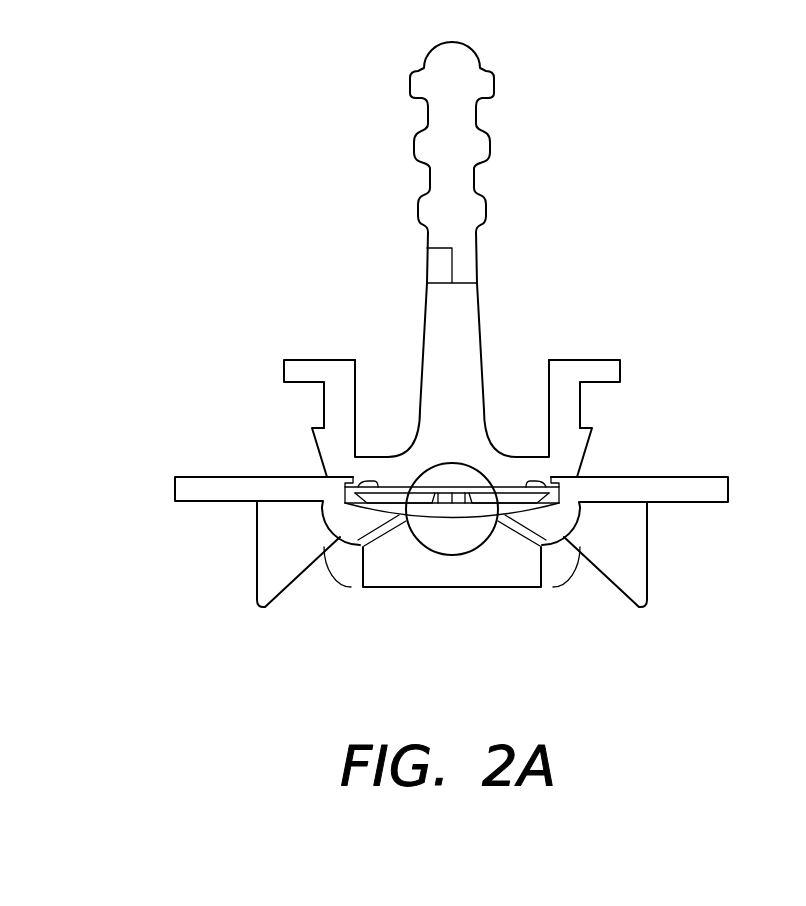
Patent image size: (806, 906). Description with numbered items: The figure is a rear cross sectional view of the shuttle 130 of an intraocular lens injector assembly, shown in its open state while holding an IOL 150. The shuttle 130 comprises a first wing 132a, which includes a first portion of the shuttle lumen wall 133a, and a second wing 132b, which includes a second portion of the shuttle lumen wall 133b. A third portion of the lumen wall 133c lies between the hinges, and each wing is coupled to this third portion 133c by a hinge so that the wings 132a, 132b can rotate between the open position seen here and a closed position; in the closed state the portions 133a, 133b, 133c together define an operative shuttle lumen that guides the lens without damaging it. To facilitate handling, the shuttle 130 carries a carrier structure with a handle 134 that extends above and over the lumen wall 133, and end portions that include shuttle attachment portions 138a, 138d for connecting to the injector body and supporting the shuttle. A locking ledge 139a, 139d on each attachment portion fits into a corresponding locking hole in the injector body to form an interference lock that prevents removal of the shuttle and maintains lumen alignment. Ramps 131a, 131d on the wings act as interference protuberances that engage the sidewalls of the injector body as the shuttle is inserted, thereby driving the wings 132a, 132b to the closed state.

The shuttle 130 is at (296, 104).
The handle 134 is at (478, 175).
The shuttle attachment portion 138a is at (309, 358).
The shuttle attachment portion 138d is at (622, 358).
The locking ledge 139a is at (313, 427).
The locking ledge 139d is at (594, 428).
The IOL 150 is at (445, 490).
The lumen wall 133 is at (456, 458).
The first portion of the shuttle lumen wall 133a is at (362, 549).
The second portion of the shuttle lumen wall 133b is at (566, 562).
The third portion of the lumen wall 133c is at (453, 557).
The first wing 132a is at (228, 504).
The second wing 132b is at (672, 504).
The ramp 131a is at (258, 606).
The ramp 131d is at (648, 606).